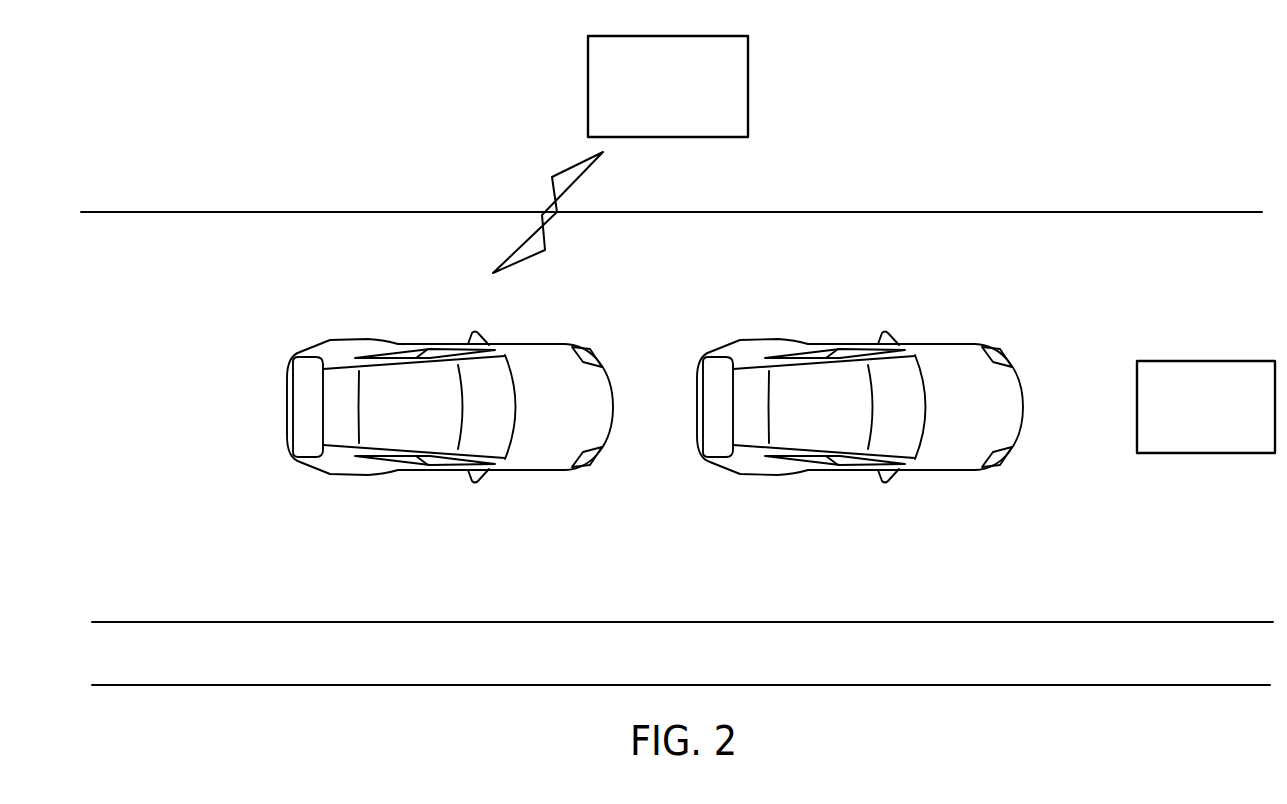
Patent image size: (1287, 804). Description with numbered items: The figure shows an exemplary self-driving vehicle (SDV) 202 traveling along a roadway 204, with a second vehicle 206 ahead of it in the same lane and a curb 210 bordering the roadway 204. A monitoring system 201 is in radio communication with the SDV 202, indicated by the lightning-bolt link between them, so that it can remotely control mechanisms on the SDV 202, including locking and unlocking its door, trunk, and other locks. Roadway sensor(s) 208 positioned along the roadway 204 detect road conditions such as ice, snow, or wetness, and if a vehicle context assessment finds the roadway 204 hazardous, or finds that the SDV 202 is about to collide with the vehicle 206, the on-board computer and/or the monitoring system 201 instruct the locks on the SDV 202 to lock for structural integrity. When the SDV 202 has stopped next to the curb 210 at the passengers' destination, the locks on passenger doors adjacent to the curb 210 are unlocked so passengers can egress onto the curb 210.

The monitoring system 201 is at (588, 86).
The self-driving vehicle (SDV) 202 is at (435, 418).
The roadway 204 is at (153, 403).
The vehicle 206 is at (845, 418).
The roadway sensor(s) 208 is at (1228, 447).
The curb 210 is at (280, 663).